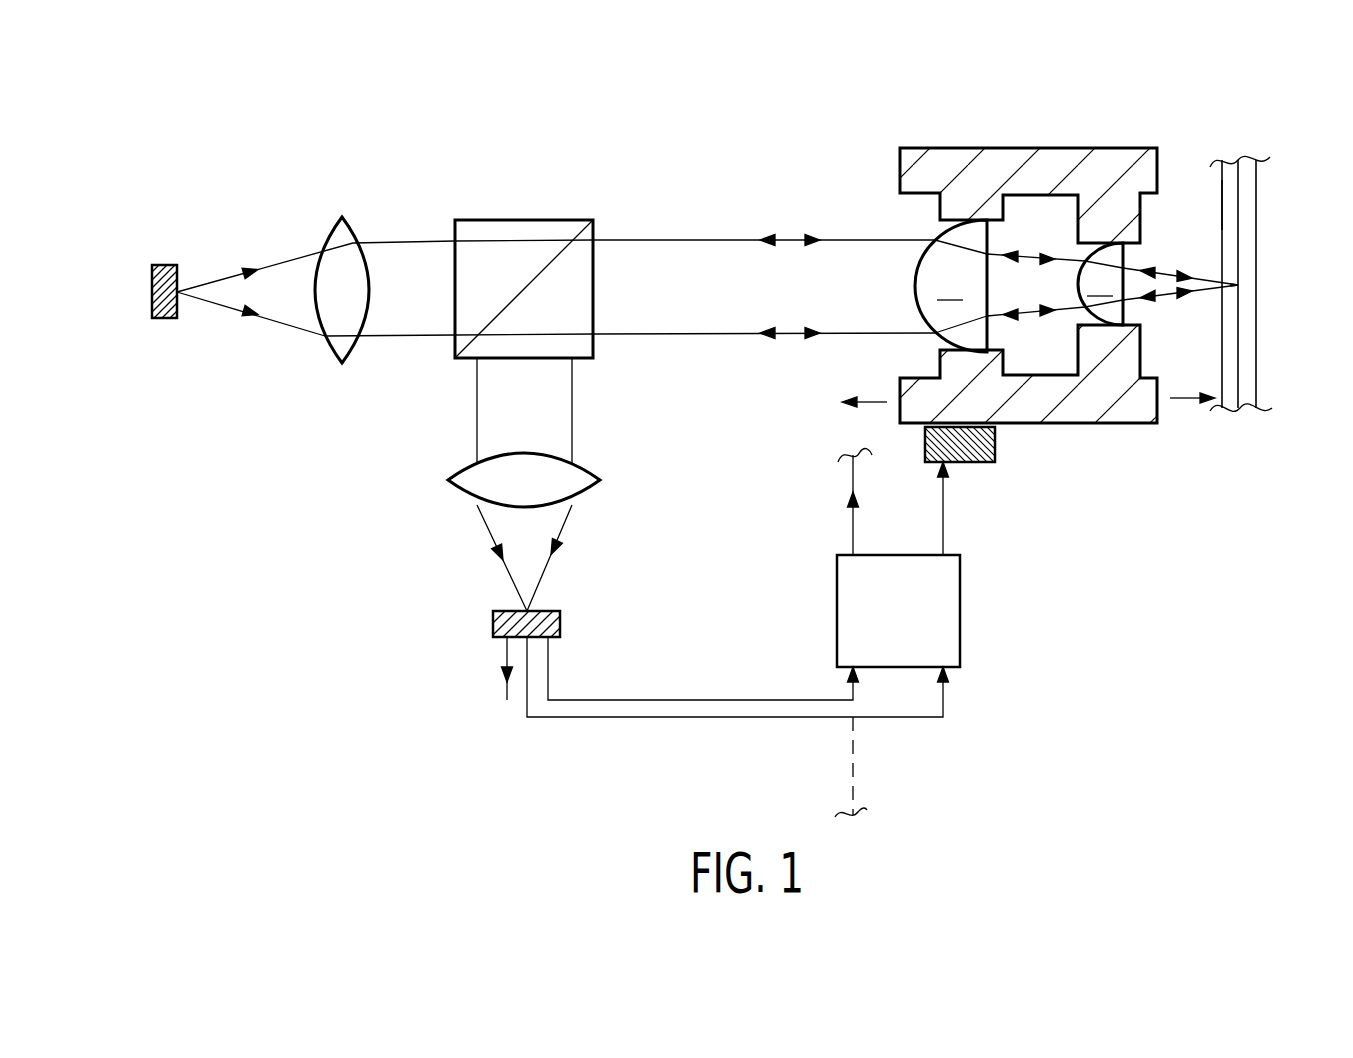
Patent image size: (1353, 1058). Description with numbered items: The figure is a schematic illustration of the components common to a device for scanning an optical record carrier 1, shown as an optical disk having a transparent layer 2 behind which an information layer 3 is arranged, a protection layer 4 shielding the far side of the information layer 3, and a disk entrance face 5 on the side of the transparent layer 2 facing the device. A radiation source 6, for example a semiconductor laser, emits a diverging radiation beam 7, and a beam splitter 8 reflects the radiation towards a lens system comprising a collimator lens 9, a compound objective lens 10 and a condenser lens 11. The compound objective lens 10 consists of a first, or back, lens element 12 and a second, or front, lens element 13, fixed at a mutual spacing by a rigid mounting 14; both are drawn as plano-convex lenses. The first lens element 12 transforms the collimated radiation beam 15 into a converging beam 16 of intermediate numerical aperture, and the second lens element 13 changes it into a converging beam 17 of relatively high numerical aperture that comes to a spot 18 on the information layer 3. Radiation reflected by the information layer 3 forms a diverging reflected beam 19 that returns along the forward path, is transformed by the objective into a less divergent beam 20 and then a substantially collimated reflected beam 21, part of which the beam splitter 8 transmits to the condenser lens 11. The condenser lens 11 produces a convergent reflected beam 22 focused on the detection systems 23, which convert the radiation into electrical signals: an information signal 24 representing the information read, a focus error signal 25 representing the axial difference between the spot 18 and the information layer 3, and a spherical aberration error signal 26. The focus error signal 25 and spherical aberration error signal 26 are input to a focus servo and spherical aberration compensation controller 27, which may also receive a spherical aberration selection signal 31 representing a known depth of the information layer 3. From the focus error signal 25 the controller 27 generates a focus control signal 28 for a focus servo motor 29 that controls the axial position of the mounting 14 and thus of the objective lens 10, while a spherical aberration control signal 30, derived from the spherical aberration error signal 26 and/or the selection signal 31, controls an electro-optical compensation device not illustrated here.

The optical record carrier 1 is at (1249, 226).
The transparent layer 2 is at (1232, 228).
The information layer 3 is at (1240, 192).
The protection layer 4 is at (1247, 257).
The disk entrance face 5 is at (1222, 195).
The radiation source 6 is at (168, 318).
The diverging radiation beam 7 is at (262, 265).
The beam splitter 8 is at (515, 220).
The collimator lens 9 is at (347, 220).
The compound objective lens 10 is at (1028, 227).
The condenser lens 11 is at (462, 490).
The first lens element 12 is at (951, 286).
The second lens element 13 is at (1100, 284).
The rigid mounting 14 is at (925, 148).
The collimated radiation beam 15 is at (808, 236).
The converging beam 16 is at (1055, 252).
The converging beam 17 is at (1190, 268).
The spot 18 is at (1240, 285).
The diverging reflected beam 19 is at (1150, 300).
The less divergent beam 20 is at (1010, 320).
The substantially collimated reflected beam 21 is at (768, 340).
The convergent reflected beam 22 is at (500, 558).
The detection systems 23 is at (492, 622).
The information signal 24 is at (503, 678).
The focus error signal 25 is at (628, 722).
The spherical aberration error signal 26 is at (628, 695).
The focus servo and spherical aberration compensation controller 27 is at (962, 620).
The focus control signal 28 is at (945, 517).
The focus servo motor 29 is at (995, 455).
The spherical aberration control signal 30 is at (850, 515).
The spherical aberration selection signal 31 is at (855, 780).